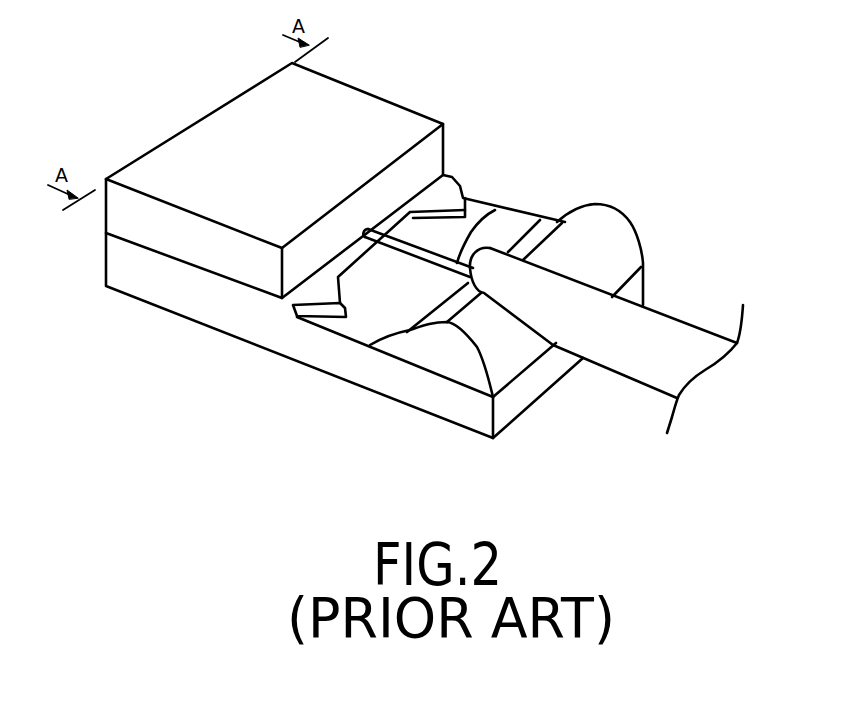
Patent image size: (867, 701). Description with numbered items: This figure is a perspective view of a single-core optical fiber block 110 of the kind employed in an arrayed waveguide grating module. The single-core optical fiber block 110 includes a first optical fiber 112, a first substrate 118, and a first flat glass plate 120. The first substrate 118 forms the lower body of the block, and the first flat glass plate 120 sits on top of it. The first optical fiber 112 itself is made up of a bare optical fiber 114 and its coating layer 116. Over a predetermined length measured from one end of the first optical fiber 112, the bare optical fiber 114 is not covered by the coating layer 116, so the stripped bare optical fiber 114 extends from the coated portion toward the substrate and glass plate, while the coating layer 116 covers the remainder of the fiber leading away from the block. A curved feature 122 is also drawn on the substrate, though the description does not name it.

The optical fiber block 110 is at (362, 444).
The optical fiber 112 is at (691, 319).
The V-groove 114 is at (497, 212).
The fiber coating (jacket) 116 is at (647, 326).
The lower substrate 118 is at (220, 322).
The upper substrate (cover) 120 is at (360, 110).
The curved guide ridge 122 is at (598, 217).